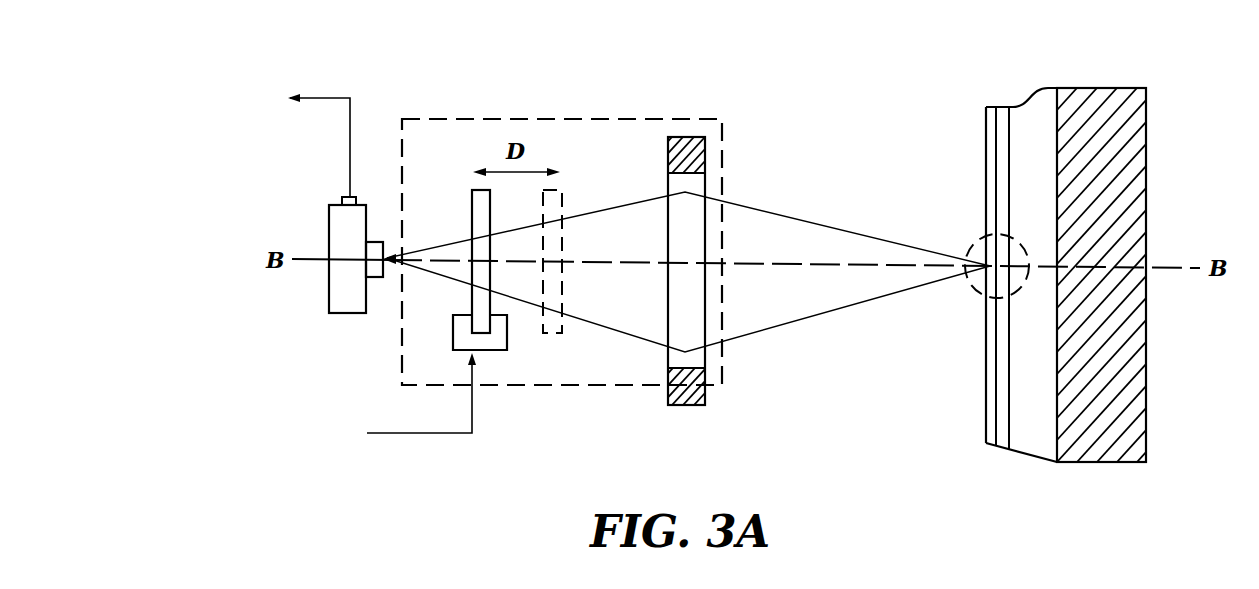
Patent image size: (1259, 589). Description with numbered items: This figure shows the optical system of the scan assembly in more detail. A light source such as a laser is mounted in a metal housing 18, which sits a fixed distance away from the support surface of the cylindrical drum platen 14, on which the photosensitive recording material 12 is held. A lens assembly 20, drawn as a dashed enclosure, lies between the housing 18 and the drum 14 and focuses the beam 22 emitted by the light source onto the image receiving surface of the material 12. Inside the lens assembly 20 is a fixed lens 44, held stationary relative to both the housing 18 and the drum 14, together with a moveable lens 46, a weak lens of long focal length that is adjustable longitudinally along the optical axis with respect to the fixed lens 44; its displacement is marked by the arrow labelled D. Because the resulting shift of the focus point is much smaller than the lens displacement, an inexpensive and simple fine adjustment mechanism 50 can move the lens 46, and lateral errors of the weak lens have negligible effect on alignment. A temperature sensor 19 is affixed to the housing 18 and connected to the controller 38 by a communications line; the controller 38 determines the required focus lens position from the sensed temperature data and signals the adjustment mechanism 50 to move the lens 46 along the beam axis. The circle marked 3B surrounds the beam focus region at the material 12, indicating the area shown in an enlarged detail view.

The recording material 12 is at (1023, 249).
The cylindrical drum platen 14 is at (1132, 88).
The housing 18 is at (386, 257).
The temperature sensor 19 is at (332, 205).
The lens assembly 20 is at (660, 118).
The beam 22 is at (830, 223).
The controller 38 is at (299, 265).
The fixed lens 44 is at (705, 182).
The moveable lens 46 is at (472, 208).
The fine adjustment mechanism 50 is at (453, 327).
The detail view circle 3B is at (973, 292).